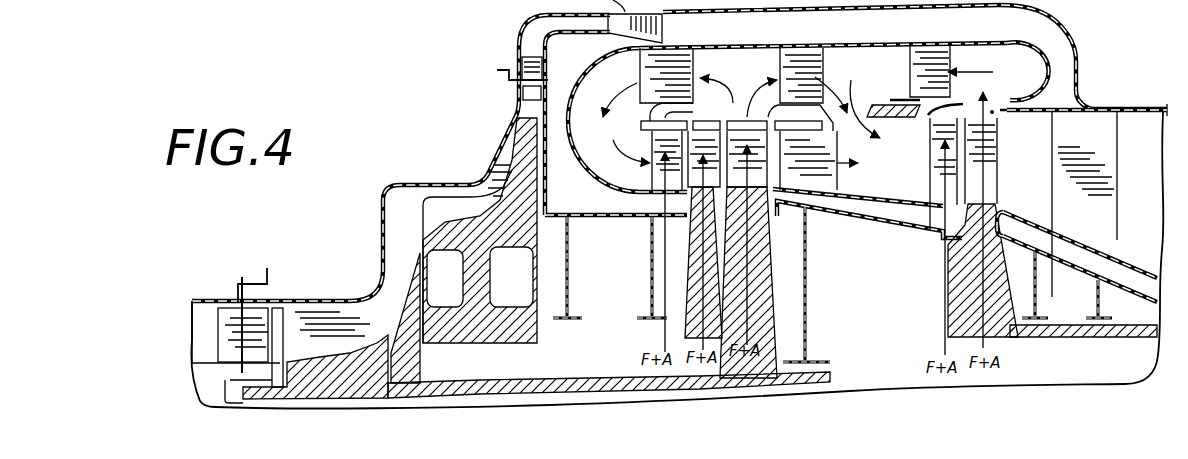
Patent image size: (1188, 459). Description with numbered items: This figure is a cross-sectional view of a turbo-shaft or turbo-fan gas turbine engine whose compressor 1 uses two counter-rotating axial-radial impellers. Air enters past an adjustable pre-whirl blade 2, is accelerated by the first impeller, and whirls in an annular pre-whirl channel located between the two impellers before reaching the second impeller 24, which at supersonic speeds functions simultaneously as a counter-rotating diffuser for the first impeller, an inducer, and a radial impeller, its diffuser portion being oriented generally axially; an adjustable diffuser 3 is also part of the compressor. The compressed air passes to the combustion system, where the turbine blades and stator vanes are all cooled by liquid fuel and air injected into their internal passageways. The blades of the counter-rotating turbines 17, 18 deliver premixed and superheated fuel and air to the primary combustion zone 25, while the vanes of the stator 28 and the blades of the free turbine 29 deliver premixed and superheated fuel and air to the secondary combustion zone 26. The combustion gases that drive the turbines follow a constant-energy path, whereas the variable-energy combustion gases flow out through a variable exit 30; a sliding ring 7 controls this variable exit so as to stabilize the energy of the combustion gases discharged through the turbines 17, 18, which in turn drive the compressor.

The compressor 1 is at (315, 317).
The adjustable pre-whirl blade 2 is at (222, 325).
The adjustable diffuser 3 is at (520, 60).
The sliding ring 7 is at (883, 106).
The turbine 17 is at (692, 292).
The turbine 18 is at (758, 295).
The second impeller 24 is at (442, 200).
The primary combustion zone 25 is at (731, 70).
The secondary combustion zone 26 is at (1003, 60).
The stator 28 is at (940, 181).
The free turbine 29 is at (990, 185).
The variable exit 30 is at (856, 118).